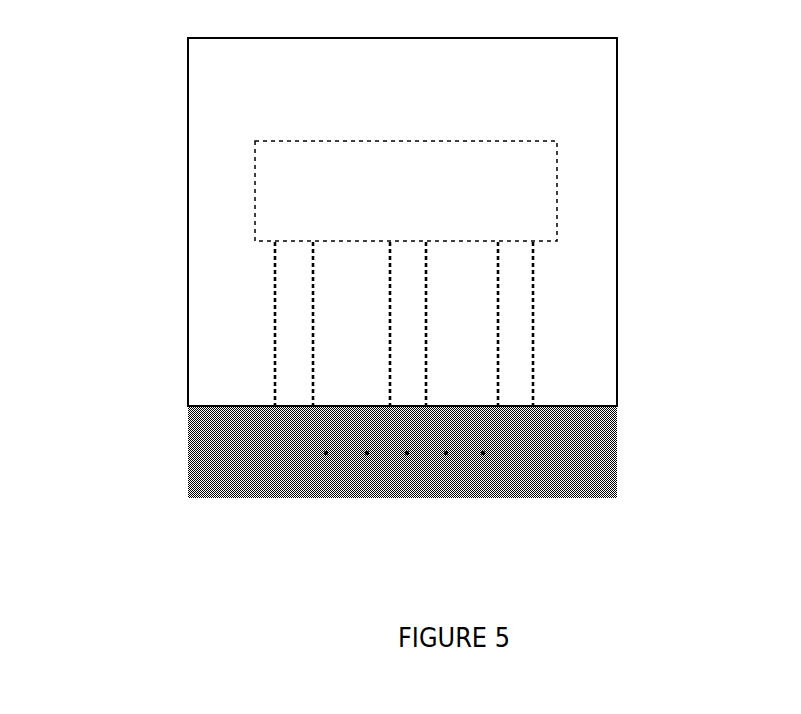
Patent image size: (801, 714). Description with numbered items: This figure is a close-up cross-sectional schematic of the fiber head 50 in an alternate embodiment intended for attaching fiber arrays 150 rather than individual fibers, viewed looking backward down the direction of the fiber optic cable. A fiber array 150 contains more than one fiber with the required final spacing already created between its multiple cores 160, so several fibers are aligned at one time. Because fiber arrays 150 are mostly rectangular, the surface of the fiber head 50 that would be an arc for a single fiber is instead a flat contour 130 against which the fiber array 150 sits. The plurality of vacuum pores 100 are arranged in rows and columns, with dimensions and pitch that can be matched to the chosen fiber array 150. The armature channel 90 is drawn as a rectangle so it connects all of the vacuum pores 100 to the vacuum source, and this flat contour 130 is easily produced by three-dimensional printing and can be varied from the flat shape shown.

The fiber head 50 is at (628, 88).
The armature channel 90 is at (395, 132).
The vacuum pores 100 is at (549, 305).
The flat contour 130 is at (547, 401).
The fiber array 150 is at (624, 453).
The cores 160 is at (308, 456).